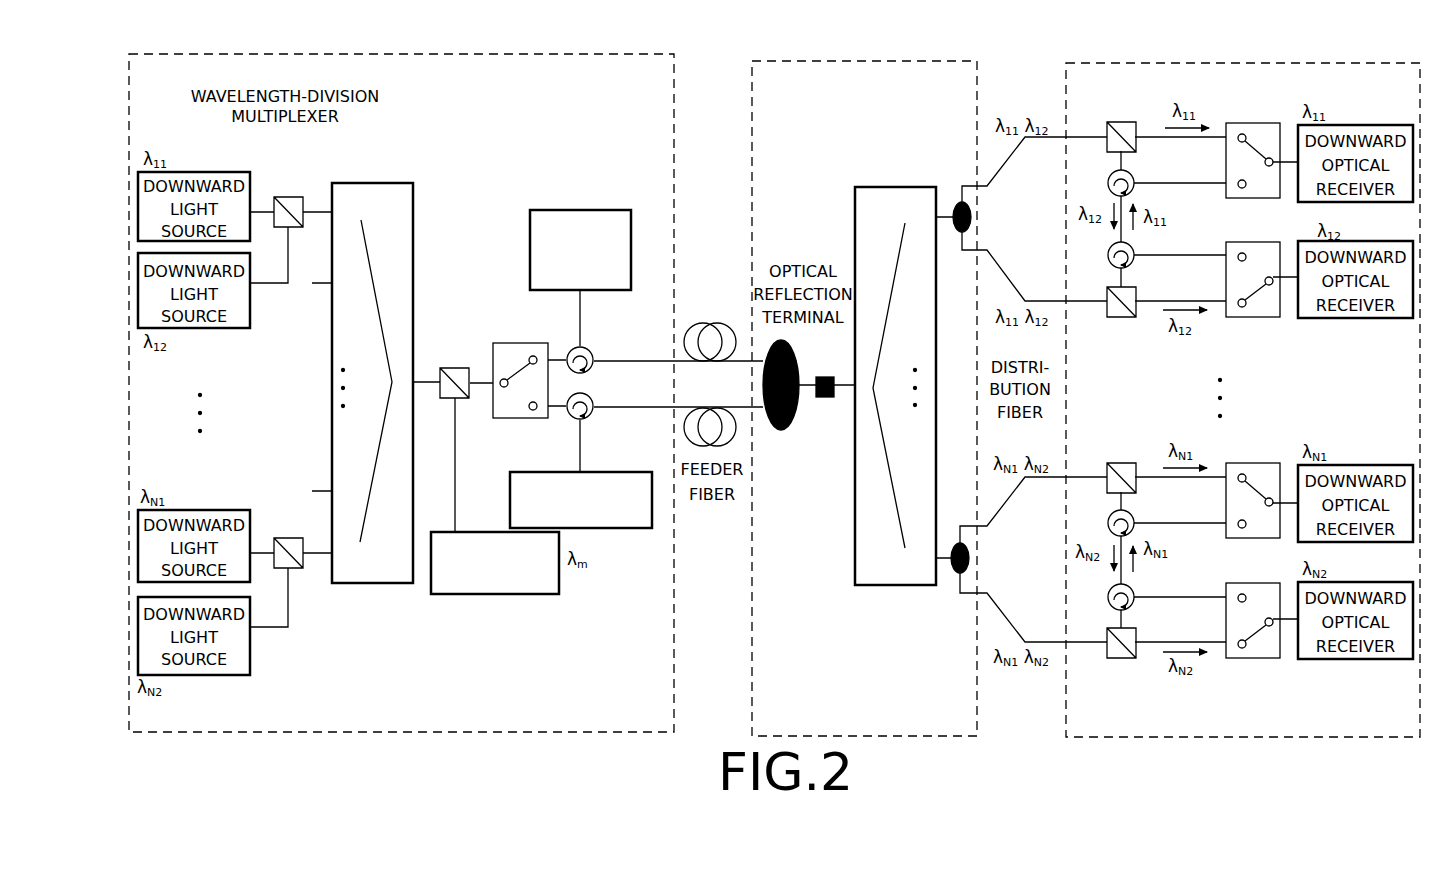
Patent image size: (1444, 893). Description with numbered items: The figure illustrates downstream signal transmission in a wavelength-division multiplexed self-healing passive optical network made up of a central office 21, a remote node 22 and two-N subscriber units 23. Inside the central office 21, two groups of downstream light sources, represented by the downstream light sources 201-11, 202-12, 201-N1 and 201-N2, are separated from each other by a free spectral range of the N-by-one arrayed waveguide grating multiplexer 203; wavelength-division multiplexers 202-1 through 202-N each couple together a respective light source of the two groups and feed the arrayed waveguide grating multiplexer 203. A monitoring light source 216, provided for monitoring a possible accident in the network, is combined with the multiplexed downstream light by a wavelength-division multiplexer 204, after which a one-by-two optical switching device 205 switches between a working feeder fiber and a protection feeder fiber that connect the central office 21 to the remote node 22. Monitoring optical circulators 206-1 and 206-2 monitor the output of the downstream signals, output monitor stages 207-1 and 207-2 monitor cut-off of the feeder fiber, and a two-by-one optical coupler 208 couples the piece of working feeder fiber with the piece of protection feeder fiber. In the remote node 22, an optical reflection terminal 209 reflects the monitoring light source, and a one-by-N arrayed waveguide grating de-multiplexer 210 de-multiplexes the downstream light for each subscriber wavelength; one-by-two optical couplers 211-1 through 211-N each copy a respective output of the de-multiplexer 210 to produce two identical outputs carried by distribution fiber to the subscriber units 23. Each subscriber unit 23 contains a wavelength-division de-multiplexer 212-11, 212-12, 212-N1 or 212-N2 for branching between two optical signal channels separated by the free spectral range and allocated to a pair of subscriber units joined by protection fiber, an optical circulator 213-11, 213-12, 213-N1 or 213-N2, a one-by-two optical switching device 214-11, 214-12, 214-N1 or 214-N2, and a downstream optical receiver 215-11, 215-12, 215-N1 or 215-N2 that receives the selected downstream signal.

The central office 21 is at (394, 54).
The remote node 22 is at (899, 61).
The subscriber units 23 is at (1285, 63).
The downstream light source 201-11 is at (198, 172).
The downstream light source 202-12 is at (213, 328).
The downstream light source 201-N1 is at (197, 510).
The downstream light source 201-N2 is at (197, 675).
The wavelength-division multiplexer 202-1 is at (288, 197).
The wavelength-division multiplexer 202-N is at (288, 538).
The N×1 arrayed waveguide grating (multiplexer) 203 is at (372, 183).
The wavelength-division multiplexer 204 is at (455, 368).
The 1×2 optical switching device 205 is at (518, 343).
The monitoring optical circulator 206-1 is at (603, 343).
The monitoring optical circulator 206-2 is at (592, 397).
The output monitor stage 207-1 is at (580, 210).
The output monitor stage 207-2 is at (627, 528).
The 2×1 optical coupler 208 is at (799, 410).
The optical reflection terminal 209 is at (826, 377).
The 1×N arrayed waveguide grating (de-multiplexer) 210 is at (881, 187).
The 1×2 optical coupler 211-1 is at (971, 217).
The 1×2 optical coupler 211-N is at (969, 558).
The wavelength-division de-multiplexer 212-11 is at (1121, 122).
The wavelength-division de-multiplexer 212-12 is at (1121, 316).
The wavelength-division de-multiplexer 212-N1 is at (1121, 463).
The wavelength-division de-multiplexer 212-N2 is at (1121, 657).
The optical circulator 213-11 is at (1135, 175).
The optical circulator 213-12 is at (1135, 262).
The optical circulator 213-N1 is at (1135, 515).
The optical circulator 213-N2 is at (1135, 604).
The 1×2 optical switching device 214-11 is at (1255, 123).
The 1×2 optical switching device 214-12 is at (1253, 318).
The 1×2 optical switching device 214-N1 is at (1255, 463).
The 1×2 optical switching device 214-N2 is at (1253, 659).
The downstream optical receiver 215-11 is at (1355, 125).
The downstream optical receiver 215-12 is at (1355, 317).
The downstream optical receiver 215-N1 is at (1355, 465).
The downstream optical receiver 215-N2 is at (1355, 658).
The monitoring light source 216 is at (497, 594).